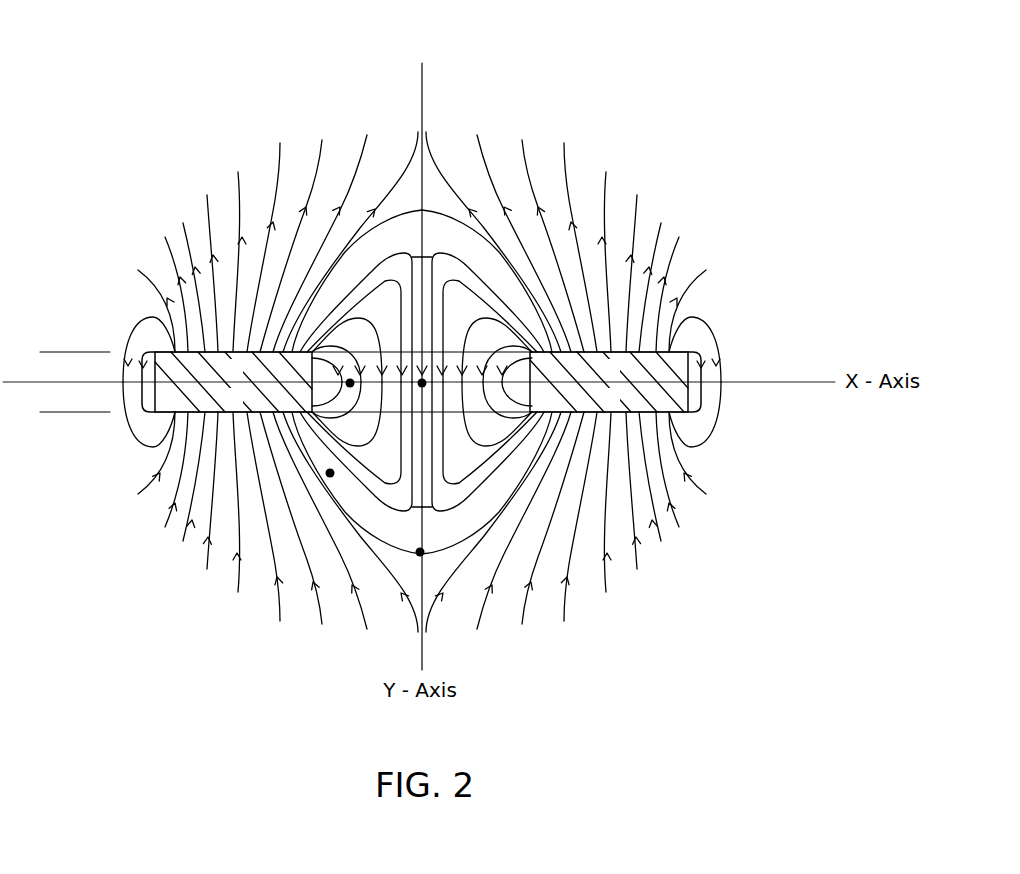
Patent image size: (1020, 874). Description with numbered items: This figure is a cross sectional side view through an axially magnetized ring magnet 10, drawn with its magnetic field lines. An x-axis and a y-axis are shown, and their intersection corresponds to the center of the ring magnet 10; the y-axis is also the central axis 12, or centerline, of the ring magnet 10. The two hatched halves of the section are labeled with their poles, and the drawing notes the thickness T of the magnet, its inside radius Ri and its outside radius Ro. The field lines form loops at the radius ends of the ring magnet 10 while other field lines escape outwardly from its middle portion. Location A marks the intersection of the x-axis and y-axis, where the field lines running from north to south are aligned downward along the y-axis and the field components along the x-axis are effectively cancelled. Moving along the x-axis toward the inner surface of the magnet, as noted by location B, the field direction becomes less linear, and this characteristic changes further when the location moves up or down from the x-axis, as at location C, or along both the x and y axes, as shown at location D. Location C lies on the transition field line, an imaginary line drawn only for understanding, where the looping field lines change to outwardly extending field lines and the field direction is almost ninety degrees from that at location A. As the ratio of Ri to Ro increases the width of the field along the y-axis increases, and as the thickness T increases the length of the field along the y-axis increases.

The ring magnet 10 is at (104, 167).
The central axis 12 is at (422, 102).
The location A is at (422, 383).
The location B is at (350, 383).
The location C is at (420, 552).
The location D is at (330, 473).
The thickness T is at (78, 305).
The outside radius Ro is at (690, 397).
The inside radius Ri is at (492, 414).